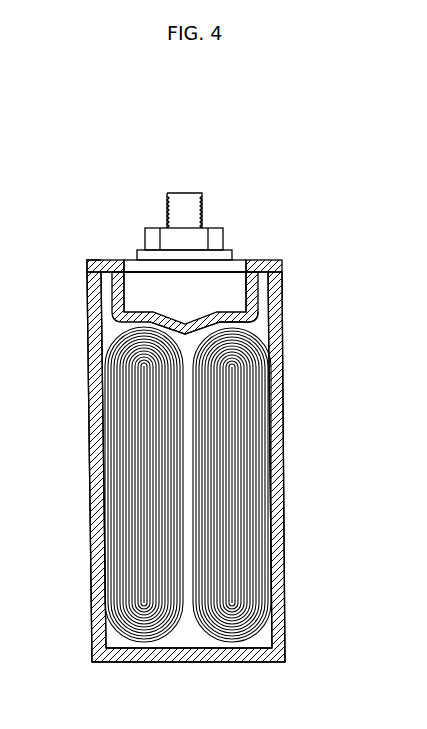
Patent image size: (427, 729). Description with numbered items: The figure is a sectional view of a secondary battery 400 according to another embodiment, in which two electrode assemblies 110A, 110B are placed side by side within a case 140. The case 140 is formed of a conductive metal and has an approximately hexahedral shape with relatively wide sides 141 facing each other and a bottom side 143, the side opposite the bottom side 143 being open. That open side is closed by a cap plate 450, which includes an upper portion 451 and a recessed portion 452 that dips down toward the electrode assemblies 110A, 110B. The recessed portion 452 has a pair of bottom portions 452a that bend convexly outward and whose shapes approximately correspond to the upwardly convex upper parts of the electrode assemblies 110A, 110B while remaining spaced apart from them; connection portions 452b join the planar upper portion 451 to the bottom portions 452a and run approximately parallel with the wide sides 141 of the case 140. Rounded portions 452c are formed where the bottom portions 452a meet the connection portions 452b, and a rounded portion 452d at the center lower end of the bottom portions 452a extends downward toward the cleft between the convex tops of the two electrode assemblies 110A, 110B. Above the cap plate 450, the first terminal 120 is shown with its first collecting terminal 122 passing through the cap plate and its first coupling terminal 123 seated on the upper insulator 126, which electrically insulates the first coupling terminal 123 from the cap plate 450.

The secondary battery 400 is at (300, 156).
The first terminal 120 is at (167, 186).
The first collecting terminal 122 is at (189, 196).
The first coupling terminal 123 is at (152, 238).
The upper insulator 126 is at (132, 272).
The cap plate 450 is at (292, 263).
The upper portion 451 is at (88, 262).
The recessed portion 452 is at (116, 264).
The bottom portions 452a is at (158, 310).
The connection portions 452b is at (238, 272).
The rounded portions 452c is at (252, 330).
The rounded portion 452d is at (190, 336).
The case 140 is at (296, 485).
The wide sides 141 is at (90, 418).
The bottom side 143 is at (270, 668).
The electrode assembly 110A is at (142, 660).
The electrode assembly 110B is at (232, 660).